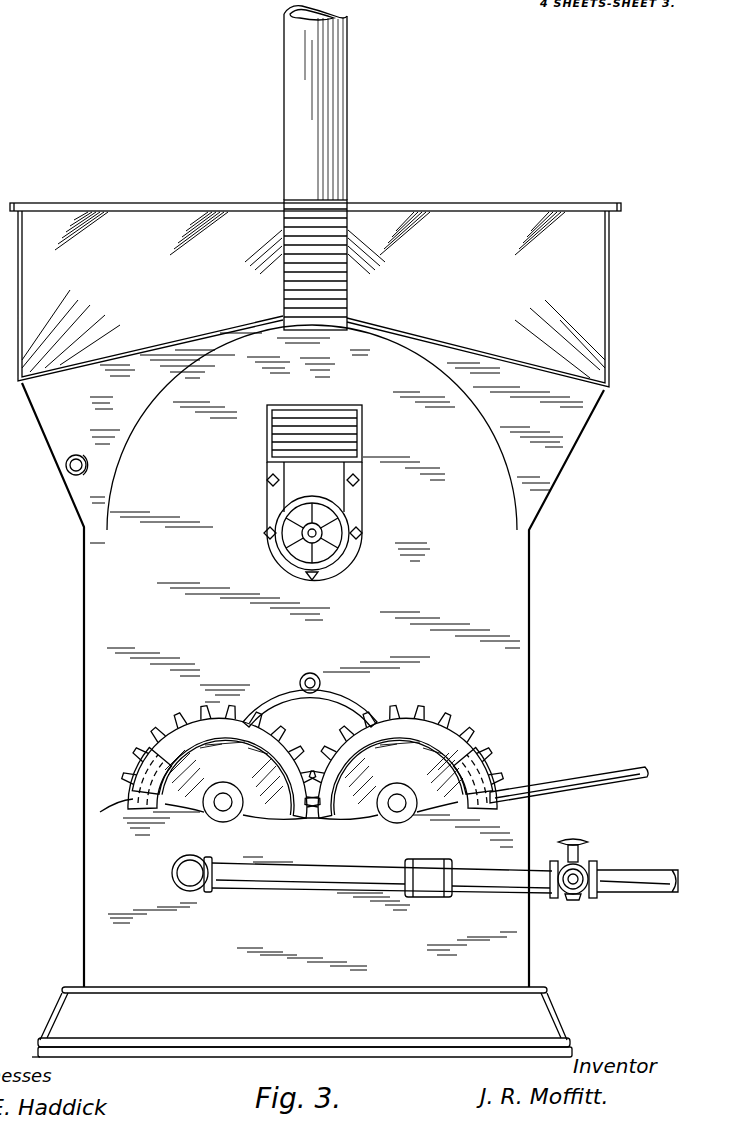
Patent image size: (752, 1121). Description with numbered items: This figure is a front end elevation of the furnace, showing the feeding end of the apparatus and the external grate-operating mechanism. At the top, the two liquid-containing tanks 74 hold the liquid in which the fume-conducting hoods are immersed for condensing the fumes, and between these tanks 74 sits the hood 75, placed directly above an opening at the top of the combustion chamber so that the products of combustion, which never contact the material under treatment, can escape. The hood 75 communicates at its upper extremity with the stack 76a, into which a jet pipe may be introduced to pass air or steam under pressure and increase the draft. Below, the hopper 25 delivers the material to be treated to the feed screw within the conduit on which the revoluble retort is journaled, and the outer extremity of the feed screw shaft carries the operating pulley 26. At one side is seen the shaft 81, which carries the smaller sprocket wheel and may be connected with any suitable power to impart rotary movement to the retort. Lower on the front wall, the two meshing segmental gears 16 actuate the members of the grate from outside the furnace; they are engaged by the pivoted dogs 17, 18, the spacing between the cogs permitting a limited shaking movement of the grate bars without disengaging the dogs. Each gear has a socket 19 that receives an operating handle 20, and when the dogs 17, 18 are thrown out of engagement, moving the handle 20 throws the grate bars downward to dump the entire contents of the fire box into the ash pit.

The liquid-containing tanks 74 is at (315, 295).
The hood 75 is at (338, 222).
The stack 76a is at (347, 138).
The shaft 81 is at (64, 466).
The hopper 25 is at (362, 434).
The operating pulley 26 is at (274, 545).
The segmental gears 16 is at (185, 724).
The pivoted dog 17 is at (366, 696).
The pivoted dog 18 is at (265, 703).
The socket 19 is at (130, 798).
The operating handle 20 is at (567, 778).